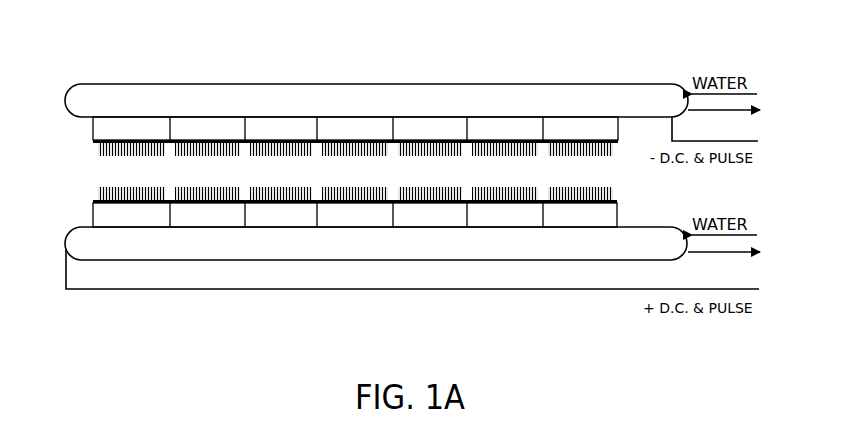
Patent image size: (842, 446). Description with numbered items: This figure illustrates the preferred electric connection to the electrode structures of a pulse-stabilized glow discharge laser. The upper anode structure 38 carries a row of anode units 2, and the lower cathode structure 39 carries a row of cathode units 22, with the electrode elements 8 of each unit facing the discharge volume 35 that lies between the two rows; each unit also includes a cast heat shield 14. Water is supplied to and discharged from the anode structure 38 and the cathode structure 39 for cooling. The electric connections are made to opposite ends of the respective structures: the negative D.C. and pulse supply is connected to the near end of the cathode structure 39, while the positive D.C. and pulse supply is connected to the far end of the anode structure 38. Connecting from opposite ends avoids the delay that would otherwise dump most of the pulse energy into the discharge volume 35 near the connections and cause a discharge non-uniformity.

The anode units 2 is at (128, 128).
The electrode elements 8 is at (93, 148).
The cast heat shield 14 is at (357, 142).
The cathode units 22 is at (203, 215).
The discharge volume 35 is at (380, 168).
The anode structure 38 is at (498, 84).
The cathode structure 39 is at (498, 260).